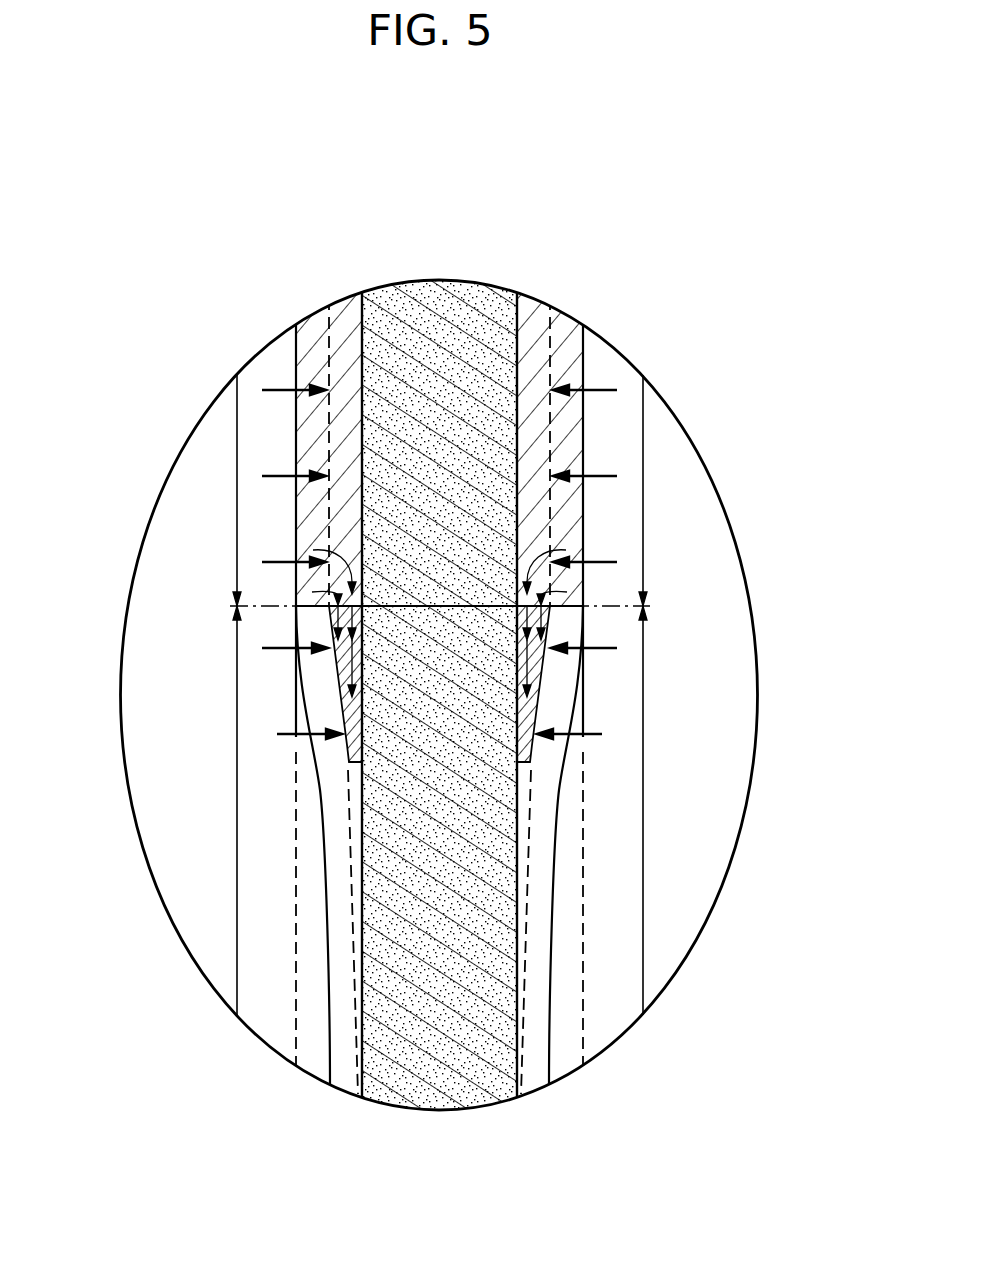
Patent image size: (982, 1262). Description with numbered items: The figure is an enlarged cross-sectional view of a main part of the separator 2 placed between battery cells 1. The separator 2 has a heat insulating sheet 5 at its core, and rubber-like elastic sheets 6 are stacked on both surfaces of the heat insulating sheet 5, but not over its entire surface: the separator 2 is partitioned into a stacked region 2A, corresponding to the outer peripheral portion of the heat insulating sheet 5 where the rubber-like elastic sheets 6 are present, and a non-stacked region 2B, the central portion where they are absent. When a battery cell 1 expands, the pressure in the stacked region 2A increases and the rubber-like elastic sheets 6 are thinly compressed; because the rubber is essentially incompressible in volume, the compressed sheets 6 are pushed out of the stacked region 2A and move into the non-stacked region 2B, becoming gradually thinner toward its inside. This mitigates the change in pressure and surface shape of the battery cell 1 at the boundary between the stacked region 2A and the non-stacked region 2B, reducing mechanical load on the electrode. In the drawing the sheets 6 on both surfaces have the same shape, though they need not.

The battery cell 1 is at (145, 663).
The separator 2 is at (292, 168).
The stacked region 2A is at (440, 490).
The non-stacked region 2B is at (440, 810).
The heat insulating sheet 5 is at (452, 300).
The rubber-like elastic sheet 6 is at (343, 330).